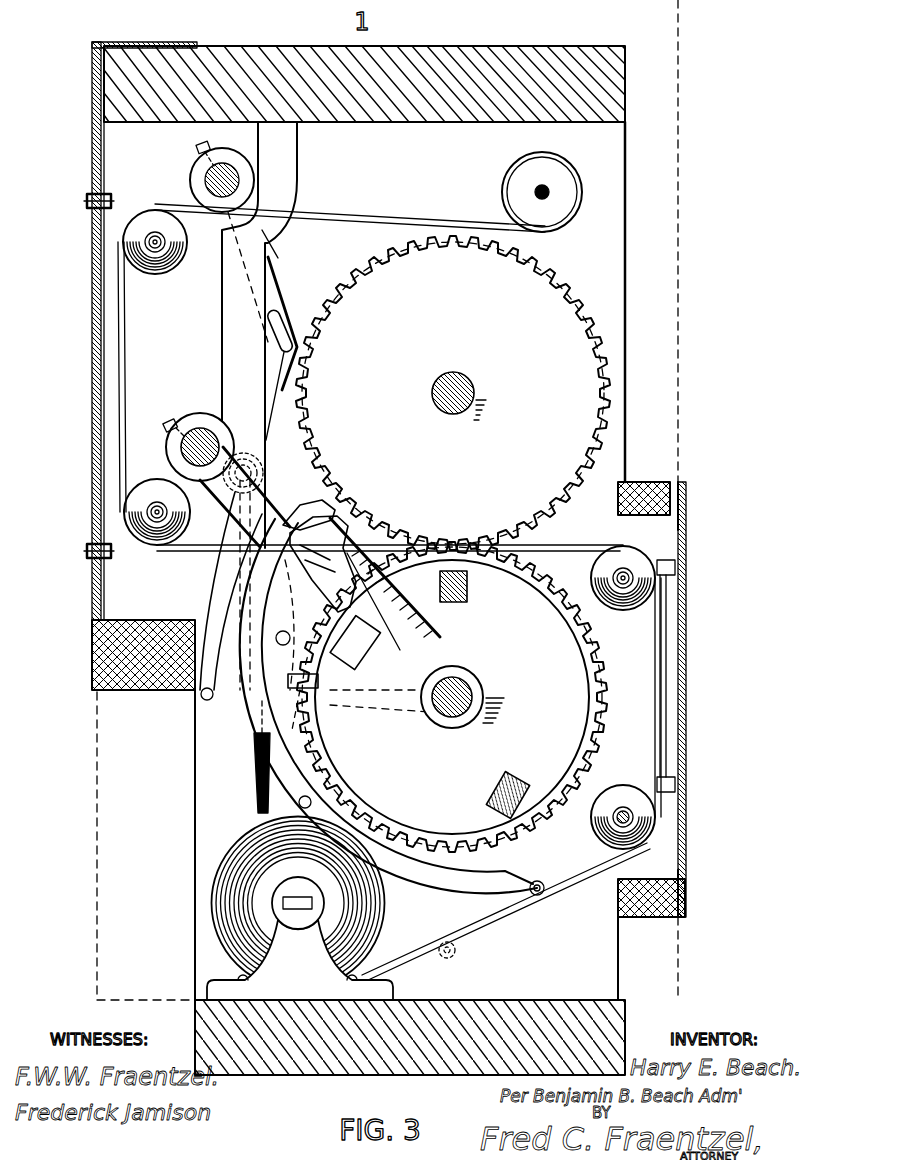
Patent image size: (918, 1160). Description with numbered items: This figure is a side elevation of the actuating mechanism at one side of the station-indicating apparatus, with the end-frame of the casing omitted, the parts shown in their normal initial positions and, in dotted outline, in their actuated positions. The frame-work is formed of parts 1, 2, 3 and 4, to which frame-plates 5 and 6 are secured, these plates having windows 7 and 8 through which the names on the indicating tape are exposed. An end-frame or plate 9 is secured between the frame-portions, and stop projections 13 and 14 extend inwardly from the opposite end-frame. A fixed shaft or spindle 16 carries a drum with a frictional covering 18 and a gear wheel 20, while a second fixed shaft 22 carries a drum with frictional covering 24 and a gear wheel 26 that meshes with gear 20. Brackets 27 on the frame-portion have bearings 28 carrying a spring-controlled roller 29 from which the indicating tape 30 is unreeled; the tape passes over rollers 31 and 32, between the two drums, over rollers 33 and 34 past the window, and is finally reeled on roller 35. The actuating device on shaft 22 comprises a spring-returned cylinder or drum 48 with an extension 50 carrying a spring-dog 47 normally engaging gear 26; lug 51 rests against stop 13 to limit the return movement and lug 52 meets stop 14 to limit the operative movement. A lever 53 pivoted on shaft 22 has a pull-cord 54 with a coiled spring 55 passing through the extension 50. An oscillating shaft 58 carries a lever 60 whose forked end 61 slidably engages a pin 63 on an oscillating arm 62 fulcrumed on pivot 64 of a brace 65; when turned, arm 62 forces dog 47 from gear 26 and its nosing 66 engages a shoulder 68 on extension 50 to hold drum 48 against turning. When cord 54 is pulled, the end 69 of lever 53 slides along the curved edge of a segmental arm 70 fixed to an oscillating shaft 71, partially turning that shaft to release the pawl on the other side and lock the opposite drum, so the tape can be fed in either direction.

The frame-work part 1 is at (364, 333).
The frame-work part 2 is at (466, 1012).
The frame-work part 3 is at (120, 652).
The frame-work part 4 is at (670, 500).
The frame-plate 5 is at (92, 150).
The frame-plate 6 is at (686, 540).
The window 7 is at (92, 320).
The window 8 is at (686, 672).
The end-frame or plate 9 is at (592, 958).
The stop projection 13 is at (468, 596).
The stop projection 14 is at (512, 779).
The shaft or spindle 16 is at (476, 386).
The frictional covering 18 is at (552, 278).
The gear wheel 20 is at (453, 393).
The shaft or spindle 22 is at (490, 686).
The frictional covering 24 is at (596, 754).
The gear wheel 26 is at (596, 676).
The bracket 27 is at (300, 960).
The bearing 28 is at (292, 908).
The spring-controlled roller 29 is at (258, 898).
The indicating tape or sheet 30 is at (380, 224).
The roller 31 is at (600, 834).
The roller 32 is at (620, 604).
The roller 33 is at (155, 490).
The roller 34 is at (158, 276).
The spring-controlled roller 35 is at (508, 177).
The spring-dog 47 is at (320, 704).
The cylinder or drum 48 is at (511, 719).
The extension 50 is at (362, 604).
The lug 51 is at (447, 602).
The lug 52 is at (358, 662).
The lever 53 is at (431, 606).
The pull-cord or strap 54 is at (250, 780).
The coiled spring 55 is at (323, 564).
The oscillating shaft or spindle 58 is at (206, 172).
The lever or arm 60 is at (282, 275).
The forked or bifurcated end 61 is at (278, 310).
The oscillating arm 62 is at (290, 384).
The pin or projection 63 is at (293, 326).
The pin or pivot 64 is at (256, 473).
The brace 65 is at (297, 168).
The nosing or hook-end 66 is at (235, 590).
The shoulder or projection 68 is at (225, 568).
The lever end 69 is at (310, 520).
The segmental arm 70 is at (432, 882).
The oscillating shaft or spindle 71 is at (200, 428).